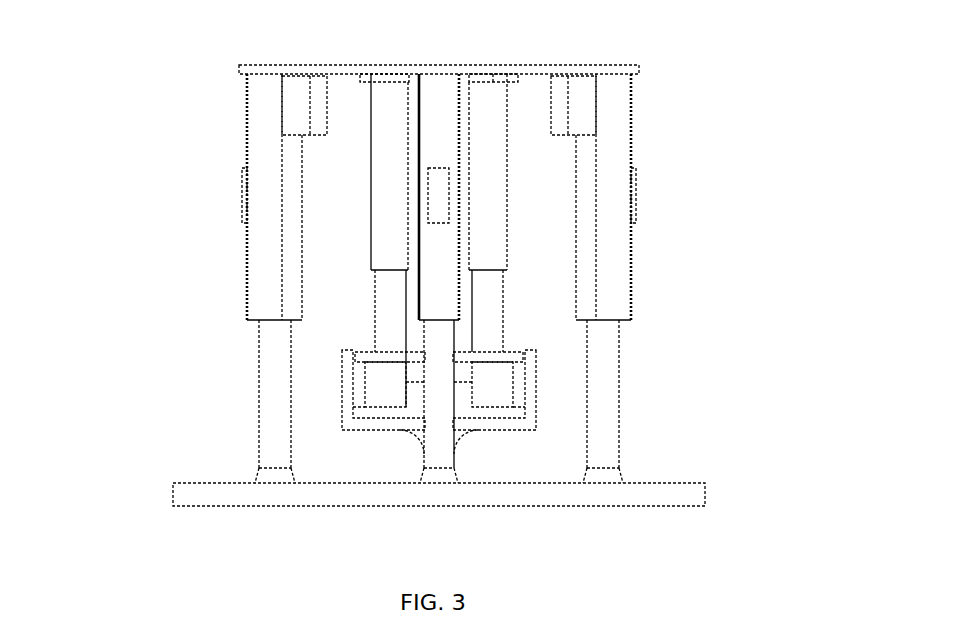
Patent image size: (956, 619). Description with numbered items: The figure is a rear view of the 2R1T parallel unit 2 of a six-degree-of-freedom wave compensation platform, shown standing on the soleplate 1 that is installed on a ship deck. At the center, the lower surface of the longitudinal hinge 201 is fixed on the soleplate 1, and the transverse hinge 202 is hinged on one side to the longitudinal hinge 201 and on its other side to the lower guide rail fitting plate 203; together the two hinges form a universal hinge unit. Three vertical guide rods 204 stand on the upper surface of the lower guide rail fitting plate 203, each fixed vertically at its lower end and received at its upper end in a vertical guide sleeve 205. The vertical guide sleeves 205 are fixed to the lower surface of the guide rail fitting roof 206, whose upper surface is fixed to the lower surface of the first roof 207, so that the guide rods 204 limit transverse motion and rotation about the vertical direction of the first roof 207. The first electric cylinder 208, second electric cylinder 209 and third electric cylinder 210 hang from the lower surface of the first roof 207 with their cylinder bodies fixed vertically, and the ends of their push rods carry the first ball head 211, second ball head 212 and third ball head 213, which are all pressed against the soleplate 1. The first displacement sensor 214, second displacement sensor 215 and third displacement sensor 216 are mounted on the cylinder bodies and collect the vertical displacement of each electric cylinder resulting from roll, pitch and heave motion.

The soleplate 1 is at (667, 498).
The 2R1T parallel unit 2 is at (643, 274).
The longitudinal hinge 201 is at (335, 449).
The transverse hinge 202 is at (529, 388).
The lower guide rail fitting plate 203 is at (298, 549).
The vertical guide rod 204 is at (488, 327).
The vertical guide sleeve 205 is at (488, 210).
The guide rail fitting roof 206 is at (468, 77).
The first roof 207 is at (490, 36).
The first electric cylinder 208 is at (258, 106).
The second electric cylinder 209 is at (435, 122).
The third electric cylinder 210 is at (612, 117).
The first ball head 211 is at (274, 481).
The second ball head 212 is at (438, 478).
The third ball head 213 is at (602, 477).
The first displacement sensor 214 is at (248, 195).
The second displacement sensor 215 is at (438, 202).
The third displacement sensor 216 is at (632, 195).